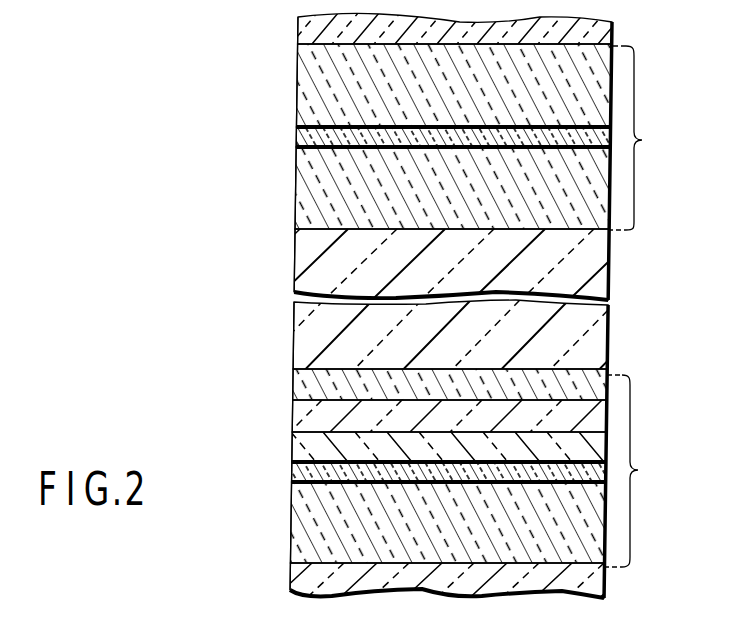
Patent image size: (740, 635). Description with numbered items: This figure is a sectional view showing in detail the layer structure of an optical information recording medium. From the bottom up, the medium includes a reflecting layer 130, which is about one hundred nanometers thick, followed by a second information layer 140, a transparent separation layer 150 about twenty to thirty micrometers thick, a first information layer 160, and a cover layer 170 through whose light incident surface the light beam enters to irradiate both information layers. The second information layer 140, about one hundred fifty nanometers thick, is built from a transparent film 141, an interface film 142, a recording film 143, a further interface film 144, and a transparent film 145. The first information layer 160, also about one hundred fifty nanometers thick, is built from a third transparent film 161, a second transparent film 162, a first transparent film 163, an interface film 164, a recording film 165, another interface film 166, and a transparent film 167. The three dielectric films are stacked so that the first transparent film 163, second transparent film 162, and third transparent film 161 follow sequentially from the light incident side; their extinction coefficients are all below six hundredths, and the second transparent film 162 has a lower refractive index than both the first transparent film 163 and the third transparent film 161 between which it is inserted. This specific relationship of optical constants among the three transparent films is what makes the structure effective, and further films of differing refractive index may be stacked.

The reflecting layer 130 is at (301, 33).
The second information layer 140 is at (643, 138).
The transparent film 141 is at (306, 93).
The interface film 142 is at (297, 127).
The recording film 143 is at (297, 137).
The interface film 144 is at (297, 147).
The transparent film 145 is at (306, 195).
The transparent separation layer 150 is at (302, 250).
The first information layer 160 is at (639, 471).
The third transparent film 161 is at (296, 384).
The second transparent film 162 is at (296, 414).
The first transparent film 163 is at (296, 445).
The interface film 164 is at (294, 463).
The recording film 165 is at (294, 476).
The interface film 166 is at (292, 484).
The transparent film 167 is at (295, 523).
The cover layer 170 is at (292, 583).